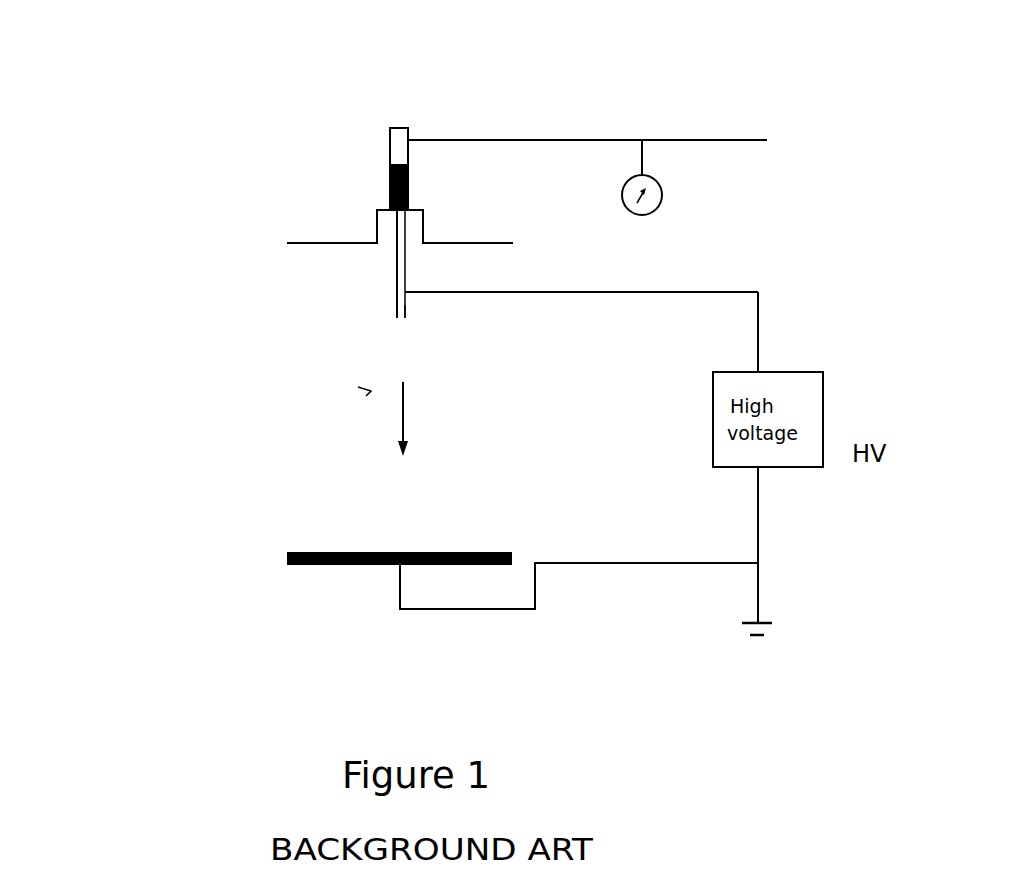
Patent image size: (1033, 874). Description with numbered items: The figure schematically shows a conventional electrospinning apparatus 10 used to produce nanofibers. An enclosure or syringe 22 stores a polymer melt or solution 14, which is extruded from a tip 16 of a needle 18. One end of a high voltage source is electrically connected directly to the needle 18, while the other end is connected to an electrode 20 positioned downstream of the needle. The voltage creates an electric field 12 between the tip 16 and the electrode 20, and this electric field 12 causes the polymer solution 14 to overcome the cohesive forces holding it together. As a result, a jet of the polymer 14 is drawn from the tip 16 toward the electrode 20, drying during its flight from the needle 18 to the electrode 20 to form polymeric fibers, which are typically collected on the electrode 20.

The electrospinning apparatus 10 is at (514, 105).
The electric field 12 is at (414, 419).
The polymer melt or solution 14 is at (382, 187).
The tip 16 is at (388, 318).
The needle 18 is at (397, 273).
The electrode 20 is at (297, 565).
The enclosure/syringe 22 is at (395, 127).